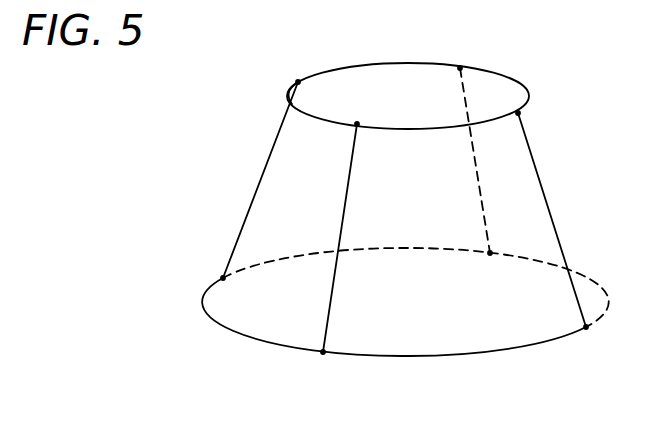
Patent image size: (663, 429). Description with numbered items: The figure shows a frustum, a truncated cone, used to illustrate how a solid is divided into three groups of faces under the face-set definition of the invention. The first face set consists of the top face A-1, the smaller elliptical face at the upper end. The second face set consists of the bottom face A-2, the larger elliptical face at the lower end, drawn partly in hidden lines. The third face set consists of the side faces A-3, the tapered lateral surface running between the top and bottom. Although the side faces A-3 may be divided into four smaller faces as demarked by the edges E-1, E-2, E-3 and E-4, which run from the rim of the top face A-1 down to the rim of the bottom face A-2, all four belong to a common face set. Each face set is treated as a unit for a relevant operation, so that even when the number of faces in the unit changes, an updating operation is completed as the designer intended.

The top face A-1 is at (401, 99).
The bottom face A-2 is at (410, 313).
The side faces A-3 is at (298, 194).
The edge E-1 is at (343, 215).
The edge E-2 is at (541, 187).
The edge E-3 is at (474, 163).
The edge E-4 is at (281, 127).